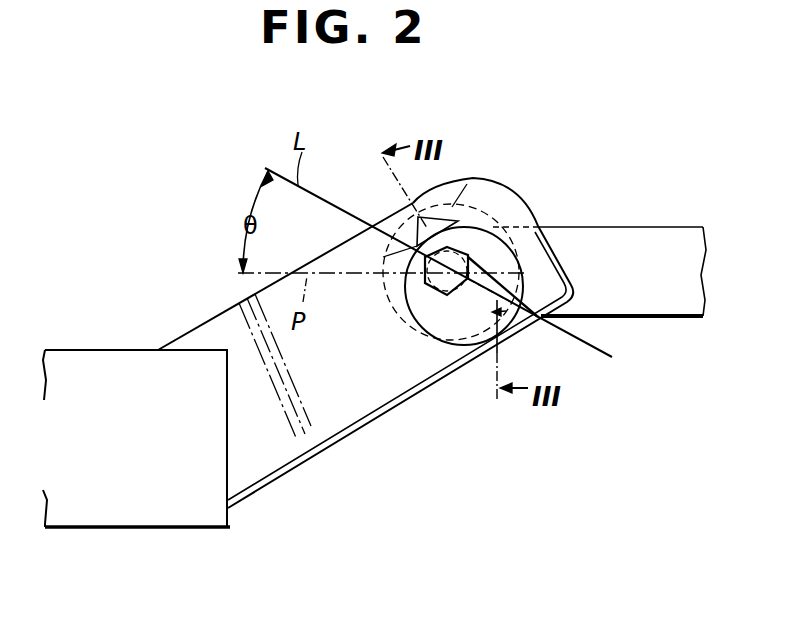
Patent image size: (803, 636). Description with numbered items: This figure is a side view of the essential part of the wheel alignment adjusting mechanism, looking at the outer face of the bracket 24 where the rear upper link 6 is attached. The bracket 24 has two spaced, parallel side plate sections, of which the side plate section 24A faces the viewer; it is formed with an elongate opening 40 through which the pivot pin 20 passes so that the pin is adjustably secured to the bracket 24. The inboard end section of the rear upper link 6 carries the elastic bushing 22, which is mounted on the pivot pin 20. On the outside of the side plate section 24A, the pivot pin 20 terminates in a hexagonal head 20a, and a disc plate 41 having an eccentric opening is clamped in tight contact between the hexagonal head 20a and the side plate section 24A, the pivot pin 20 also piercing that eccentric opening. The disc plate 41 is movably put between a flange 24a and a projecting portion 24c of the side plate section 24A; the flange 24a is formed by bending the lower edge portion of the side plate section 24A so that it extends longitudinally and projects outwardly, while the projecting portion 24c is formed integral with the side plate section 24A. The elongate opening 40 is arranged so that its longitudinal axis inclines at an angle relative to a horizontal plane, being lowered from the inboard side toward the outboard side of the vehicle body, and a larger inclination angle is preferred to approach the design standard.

The rear upper link 6 is at (680, 318).
The pivot pin 20 is at (458, 300).
The hexagonal head 20a is at (428, 292).
The elastic bushing 22 is at (493, 221).
The bracket 24 is at (205, 322).
The side plate section 24A is at (313, 413).
The flange 24a is at (484, 302).
The projecting portion 24c is at (467, 184).
The elongate opening 40 is at (468, 353).
The disc plate 41 is at (538, 318).